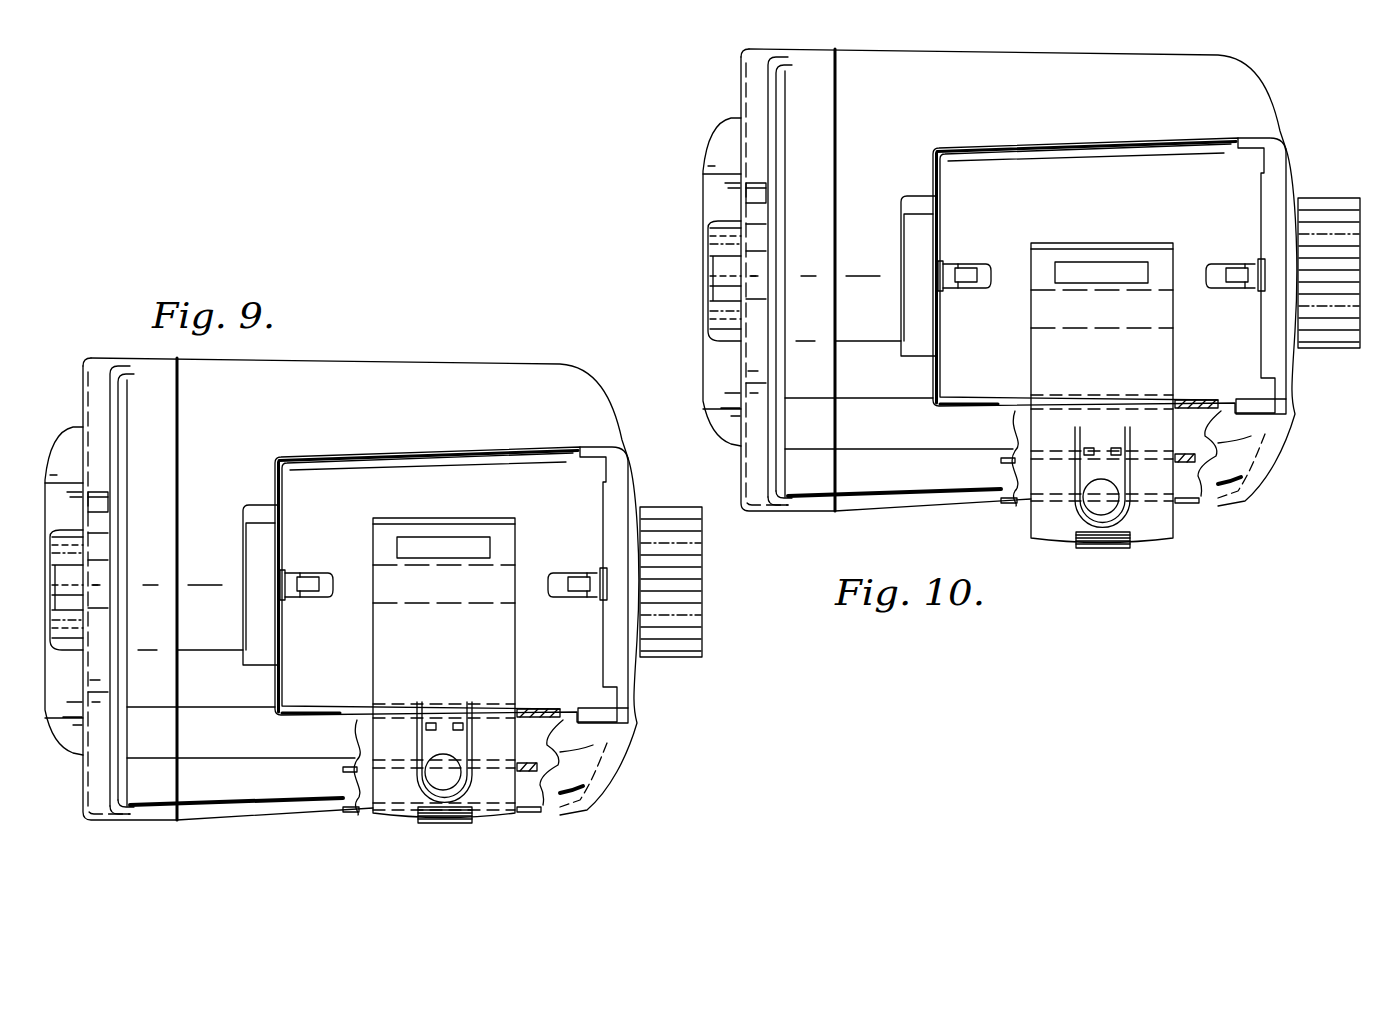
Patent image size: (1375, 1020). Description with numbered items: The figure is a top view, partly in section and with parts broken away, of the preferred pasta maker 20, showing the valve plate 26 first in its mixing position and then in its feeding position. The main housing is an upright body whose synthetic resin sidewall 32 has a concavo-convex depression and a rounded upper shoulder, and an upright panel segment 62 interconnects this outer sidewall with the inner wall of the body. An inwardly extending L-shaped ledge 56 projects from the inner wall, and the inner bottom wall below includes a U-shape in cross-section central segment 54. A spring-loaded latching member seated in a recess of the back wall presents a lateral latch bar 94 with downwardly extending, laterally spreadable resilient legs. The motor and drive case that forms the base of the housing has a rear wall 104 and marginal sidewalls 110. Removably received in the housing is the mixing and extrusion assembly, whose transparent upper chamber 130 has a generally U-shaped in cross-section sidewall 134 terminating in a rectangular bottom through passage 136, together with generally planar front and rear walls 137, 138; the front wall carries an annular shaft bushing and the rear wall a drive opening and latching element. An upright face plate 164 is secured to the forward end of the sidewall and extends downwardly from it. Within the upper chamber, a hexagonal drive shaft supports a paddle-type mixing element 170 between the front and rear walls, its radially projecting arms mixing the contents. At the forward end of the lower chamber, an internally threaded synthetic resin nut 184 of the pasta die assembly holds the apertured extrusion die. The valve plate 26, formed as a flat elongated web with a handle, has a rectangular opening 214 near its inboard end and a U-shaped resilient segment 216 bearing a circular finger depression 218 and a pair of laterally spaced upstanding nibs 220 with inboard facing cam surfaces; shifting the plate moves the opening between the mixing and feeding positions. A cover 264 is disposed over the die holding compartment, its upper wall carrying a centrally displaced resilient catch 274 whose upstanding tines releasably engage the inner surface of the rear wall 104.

In FIG. 9, the pasta maker 20 is at (648, 764).
In FIG. 10, the pasta maker 20 is at (1048, 294).
In FIG. 9, the valve plate 26 is at (448, 845).
In FIG. 10, the valve plate 26 is at (1151, 403).
In FIG. 9, the sidewall 32 is at (468, 359).
In FIG. 10, the sidewall 32 is at (995, 264).
In FIG. 9, the central segment 54 is at (352, 820).
In FIG. 10, the central segment 54 is at (1099, 482).
In FIG. 9, the L-shaped ledge 56 is at (526, 456).
In FIG. 10, the L-shaped ledge 56 is at (1086, 120).
In FIG. 9, the upright panel segment 62 is at (605, 416).
In FIG. 10, the upright panel segment 62 is at (1028, 99).
In FIG. 9, the latch bar 94 is at (253, 568).
In FIG. 10, the latch bar 94 is at (899, 276).
In FIG. 9, the rear wall 104 is at (80, 772).
In FIG. 10, the rear wall 104 is at (729, 336).
In FIG. 9, the marginal sidewalls 110 is at (106, 354).
In FIG. 10, the marginal sidewalls 110 is at (780, 318).
In FIG. 9, the upper chamber 130 is at (322, 466).
In FIG. 10, the upper chamber 130 is at (1104, 256).
In FIG. 9, the sidewall 134 is at (412, 482).
In FIG. 10, the sidewall 134 is at (1086, 169).
In FIG. 9, the bottom through passage 136 is at (415, 587).
In FIG. 10, the bottom through passage 136 is at (1084, 296).
In FIG. 9, the front wall 137 is at (600, 548).
In FIG. 10, the front wall 137 is at (1234, 249).
In FIG. 9, the rear wall 138 is at (284, 549).
In FIG. 10, the rear wall 138 is at (970, 249).
In FIG. 9, the face plate 164 is at (640, 478).
In FIG. 10, the face plate 164 is at (1283, 313).
In FIG. 9, the mixing element 170 is at (577, 614).
In FIG. 10, the mixing element 170 is at (1230, 314).
In FIG. 9, the nut 184 is at (661, 640).
In FIG. 10, the nut 184 is at (1329, 302).
In FIG. 9, the rectangular opening 214 is at (437, 548).
In FIG. 10, the rectangular opening 214 is at (1111, 223).
In FIG. 9, the U-shaped resilient segment 216 is at (440, 742).
In FIG. 10, the U-shaped resilient segment 216 is at (1195, 521).
In FIG. 9, the finger depression 218 is at (432, 785).
In FIG. 10, the finger depression 218 is at (1085, 510).
In FIG. 9, the nibs 220 is at (459, 722).
In FIG. 10, the nibs 220 is at (1103, 403).
In FIG. 9, the cover 264 is at (52, 424).
In FIG. 10, the cover 264 is at (660, 238).
In FIG. 9, the catch 274 is at (70, 590).
In FIG. 10, the catch 274 is at (766, 281).